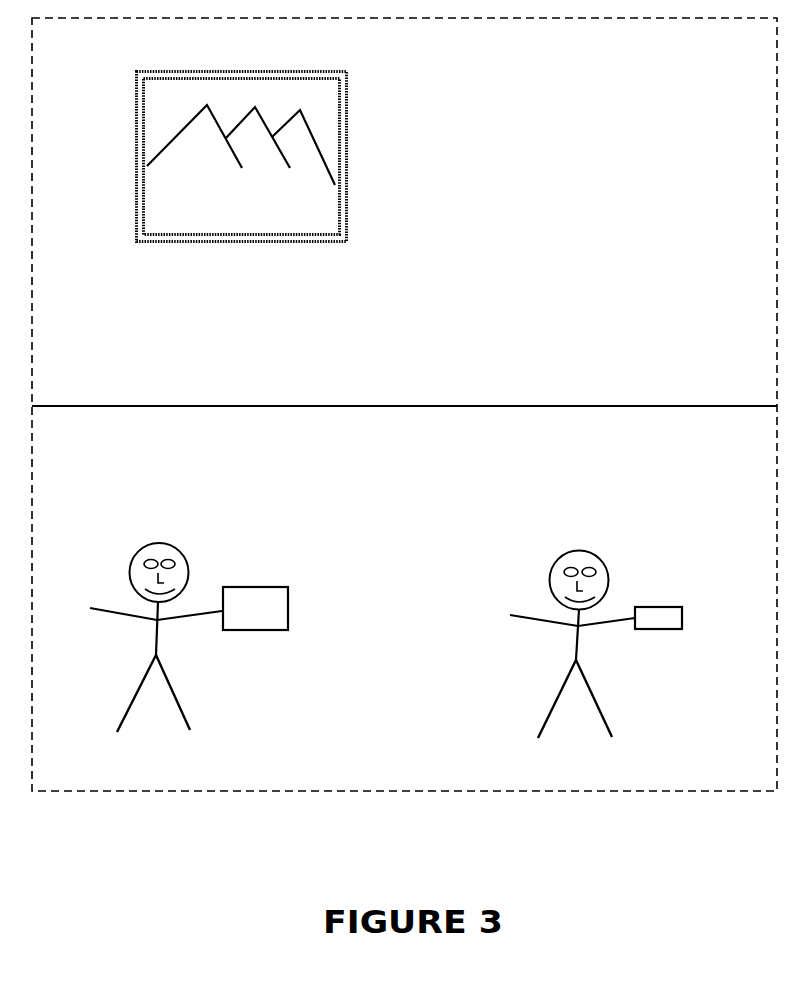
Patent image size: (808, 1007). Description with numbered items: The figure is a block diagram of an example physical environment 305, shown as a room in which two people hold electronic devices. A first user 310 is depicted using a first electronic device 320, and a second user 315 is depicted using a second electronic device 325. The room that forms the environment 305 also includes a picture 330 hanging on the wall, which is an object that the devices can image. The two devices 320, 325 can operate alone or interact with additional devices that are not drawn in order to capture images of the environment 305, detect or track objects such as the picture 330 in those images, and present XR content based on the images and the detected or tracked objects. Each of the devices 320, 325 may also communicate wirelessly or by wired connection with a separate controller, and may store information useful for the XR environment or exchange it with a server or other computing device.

The physical environment 305 is at (622, 42).
The first user 310 is at (185, 710).
The second user 315 is at (602, 708).
The first electronic device 320 is at (275, 618).
The second electronic device 325 is at (672, 607).
The picture 330 is at (347, 148).